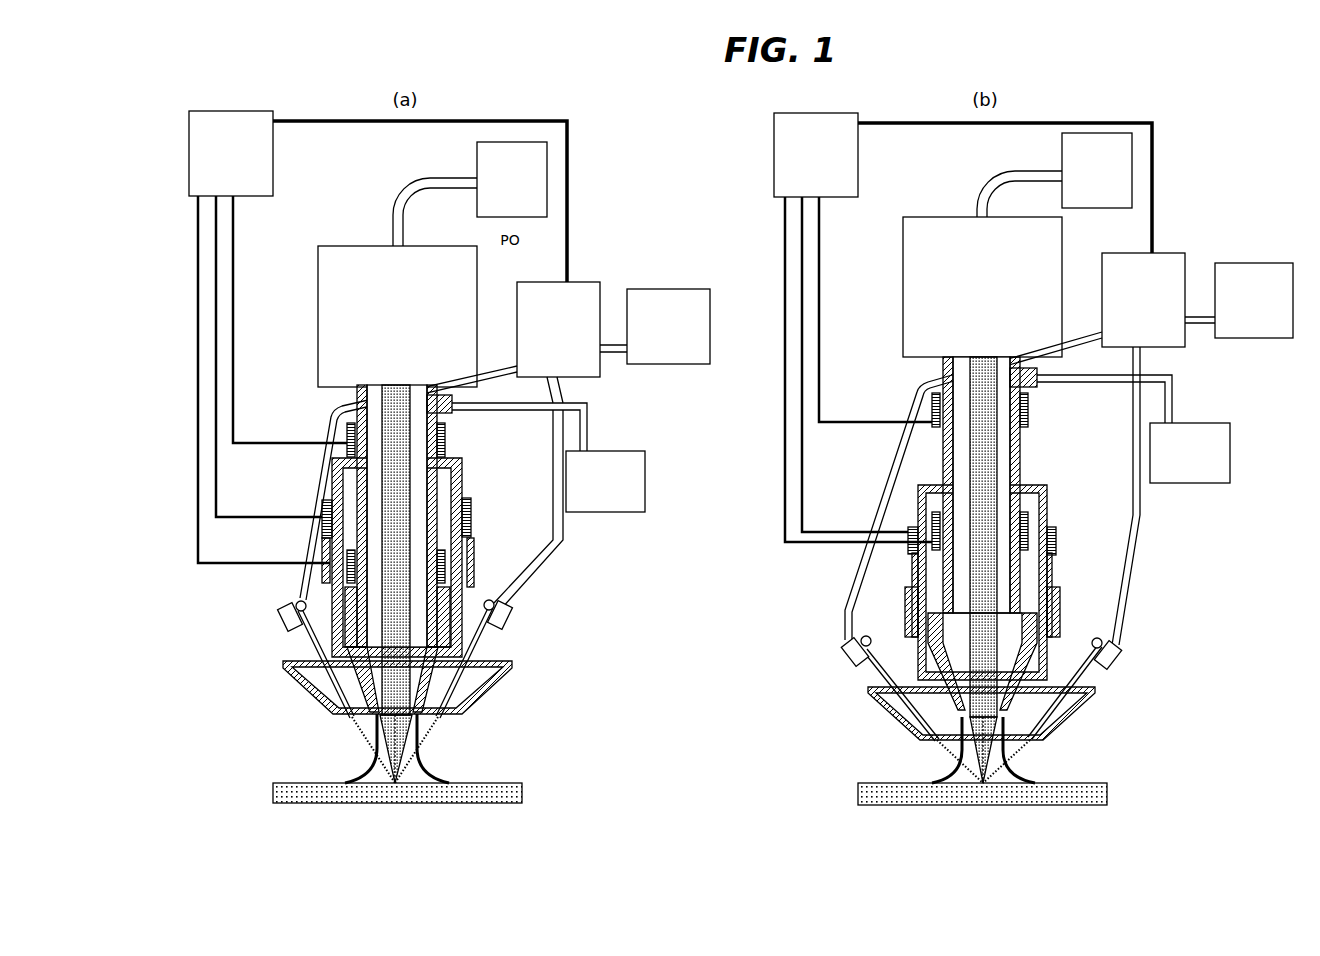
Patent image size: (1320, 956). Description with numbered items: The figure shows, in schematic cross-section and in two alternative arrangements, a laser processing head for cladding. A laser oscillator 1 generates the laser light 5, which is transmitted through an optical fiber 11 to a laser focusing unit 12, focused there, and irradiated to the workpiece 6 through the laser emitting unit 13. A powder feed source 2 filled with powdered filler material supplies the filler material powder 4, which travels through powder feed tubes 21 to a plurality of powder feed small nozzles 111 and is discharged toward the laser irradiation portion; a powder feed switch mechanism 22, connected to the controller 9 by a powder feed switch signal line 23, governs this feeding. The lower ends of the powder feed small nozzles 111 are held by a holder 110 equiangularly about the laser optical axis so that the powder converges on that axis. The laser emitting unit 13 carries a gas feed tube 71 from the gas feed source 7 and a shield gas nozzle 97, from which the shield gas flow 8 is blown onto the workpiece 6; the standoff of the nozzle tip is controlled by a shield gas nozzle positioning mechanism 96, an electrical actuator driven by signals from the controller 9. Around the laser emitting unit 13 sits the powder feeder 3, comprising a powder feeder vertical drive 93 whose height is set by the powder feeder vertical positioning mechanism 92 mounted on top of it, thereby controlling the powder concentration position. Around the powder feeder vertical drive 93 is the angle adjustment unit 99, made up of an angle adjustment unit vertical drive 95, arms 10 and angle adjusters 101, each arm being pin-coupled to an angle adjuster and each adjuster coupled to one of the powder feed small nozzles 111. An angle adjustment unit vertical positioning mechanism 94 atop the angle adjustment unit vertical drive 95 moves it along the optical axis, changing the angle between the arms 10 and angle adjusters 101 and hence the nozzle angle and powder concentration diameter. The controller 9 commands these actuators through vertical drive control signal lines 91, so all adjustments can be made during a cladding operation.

The laser oscillator 1 is at (477, 158).
The powder feed source 2 is at (682, 289).
The powder feeder 3 is at (292, 686).
The filler material powder 4 is at (360, 733).
The laser light 5 is at (392, 497).
The workpiece 6 is at (273, 792).
The gas feed source 7 is at (645, 478).
The shield gas flow 8 is at (437, 778).
The controller 9 is at (275, 152).
The arms 10 is at (312, 578).
The optical fiber 11 is at (400, 196).
The laser focusing unit 12 is at (325, 272).
The laser emitting unit 13 is at (432, 535).
The powder feed tubes 21 is at (500, 365).
The powder feed switch mechanism 22 is at (602, 366).
The powder feed switch signal line 23 is at (569, 152).
The gas feed tube 71 is at (589, 426).
The vertical drive control signal lines 91 is at (200, 328).
The powder feeder vertical positioning mechanism 92 is at (445, 432).
The powder feeder vertical drive 93 is at (462, 470).
The angle adjustment unit vertical positioning mechanism 94 is at (471, 505).
The angle adjustment unit vertical drive 95 is at (322, 545).
The shield gas nozzle positioning mechanism 96 is at (440, 562).
The shield gas nozzle 97 is at (447, 662).
The angle adjustment unit 99 is at (548, 632).
The angle adjusters 101 is at (278, 620).
The holder 110 is at (492, 676).
The powder feed small nozzles 111 is at (318, 640).